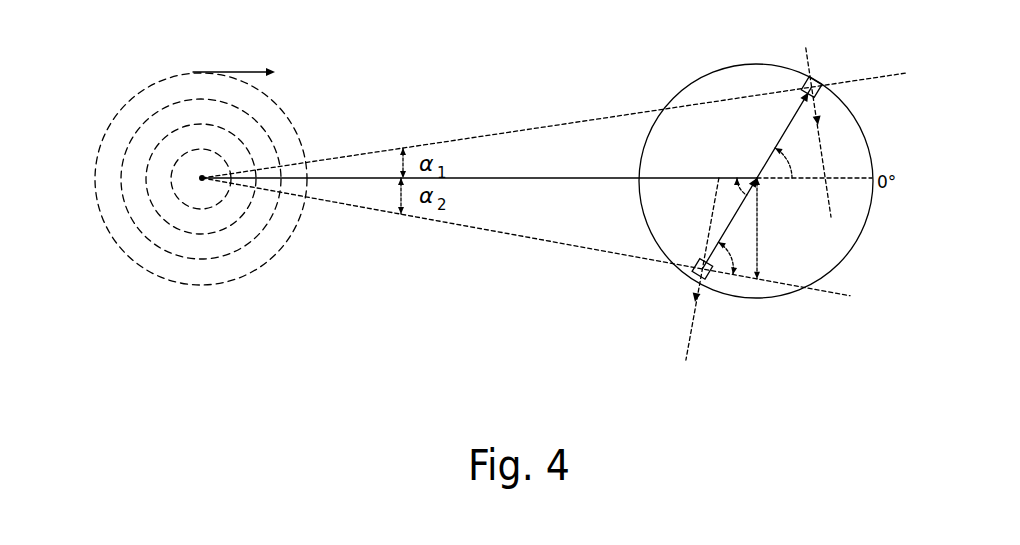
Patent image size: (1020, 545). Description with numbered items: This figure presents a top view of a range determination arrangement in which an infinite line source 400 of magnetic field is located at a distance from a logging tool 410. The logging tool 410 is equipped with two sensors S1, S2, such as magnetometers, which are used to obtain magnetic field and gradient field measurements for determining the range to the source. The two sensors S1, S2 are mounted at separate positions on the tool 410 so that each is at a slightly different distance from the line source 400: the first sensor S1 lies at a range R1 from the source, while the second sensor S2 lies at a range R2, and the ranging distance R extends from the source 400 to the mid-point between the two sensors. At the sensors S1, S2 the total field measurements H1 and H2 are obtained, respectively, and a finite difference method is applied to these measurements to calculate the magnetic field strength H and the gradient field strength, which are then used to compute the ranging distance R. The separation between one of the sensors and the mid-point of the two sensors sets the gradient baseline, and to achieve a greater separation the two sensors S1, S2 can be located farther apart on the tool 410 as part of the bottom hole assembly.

The infinite line source 400 is at (166, 60).
The logging tool 410 is at (691, 66).
The magnetic field strength H is at (234, 58).
The ranging distance R is at (537, 161).
The range to first sensor R1 is at (554, 125).
The range to second sensor R2 is at (526, 237).
The first sensor S1 is at (800, 86).
The second sensor S2 is at (695, 270).
The total field measurement at first sensor H1 is at (830, 130).
The total field measurement at second sensor H2 is at (680, 269).